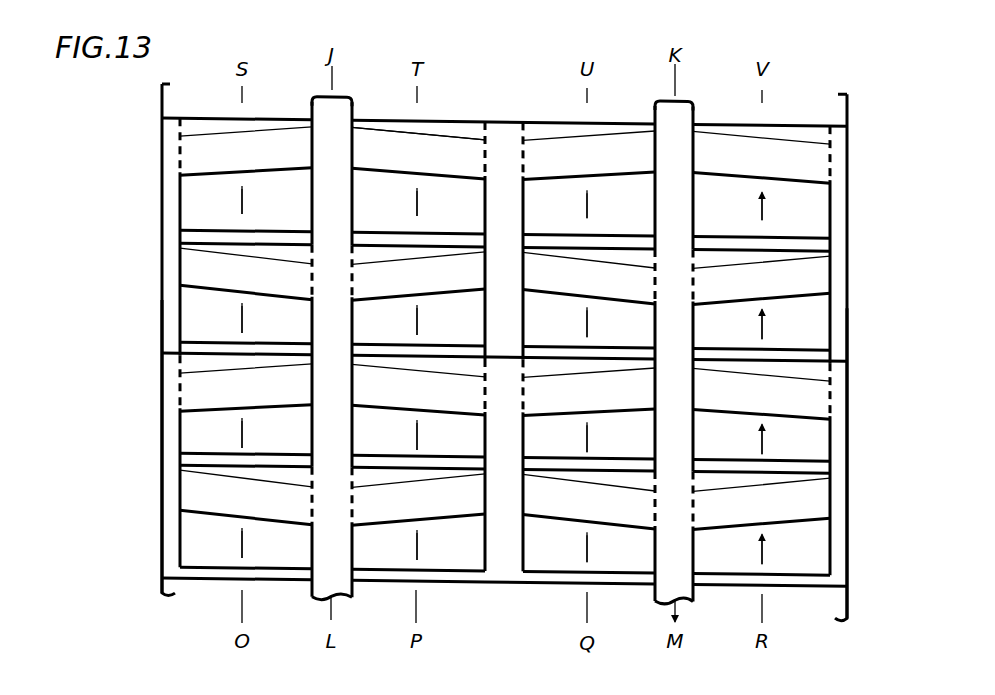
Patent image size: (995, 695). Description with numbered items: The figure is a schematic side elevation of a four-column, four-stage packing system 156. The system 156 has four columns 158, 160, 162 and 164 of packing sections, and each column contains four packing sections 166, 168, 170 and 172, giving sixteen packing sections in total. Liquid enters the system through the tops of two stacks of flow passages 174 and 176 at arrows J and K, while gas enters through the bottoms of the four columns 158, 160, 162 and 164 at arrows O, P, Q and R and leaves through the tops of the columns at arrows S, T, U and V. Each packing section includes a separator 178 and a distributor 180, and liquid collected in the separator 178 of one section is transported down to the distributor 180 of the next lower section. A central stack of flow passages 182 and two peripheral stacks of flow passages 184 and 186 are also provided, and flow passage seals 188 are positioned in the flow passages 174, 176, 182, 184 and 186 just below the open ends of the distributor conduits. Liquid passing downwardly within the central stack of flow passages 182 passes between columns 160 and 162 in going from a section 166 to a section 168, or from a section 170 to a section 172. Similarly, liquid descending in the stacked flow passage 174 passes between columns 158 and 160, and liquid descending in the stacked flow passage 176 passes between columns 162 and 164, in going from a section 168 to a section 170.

The packing system 156 is at (358, 46).
The column 158 is at (205, 600).
The column 160 is at (457, 597).
The column 162 is at (545, 600).
The column 164 is at (802, 603).
The packing section 166 is at (876, 245).
The packing section 168 is at (876, 248).
The packing section 170 is at (876, 362).
The packing section 172 is at (876, 478).
The stack of flow passages 174 is at (341, 112).
The stack of flow passages 176 is at (668, 100).
The separator 178 is at (450, 140).
The distributor 180 is at (453, 230).
The central stack of flow passages 182 is at (508, 138).
The peripheral stack of flow passages 184 is at (170, 121).
The peripheral stack of flow passages 186 is at (838, 120).
The flow passage seal 188 is at (670, 243).